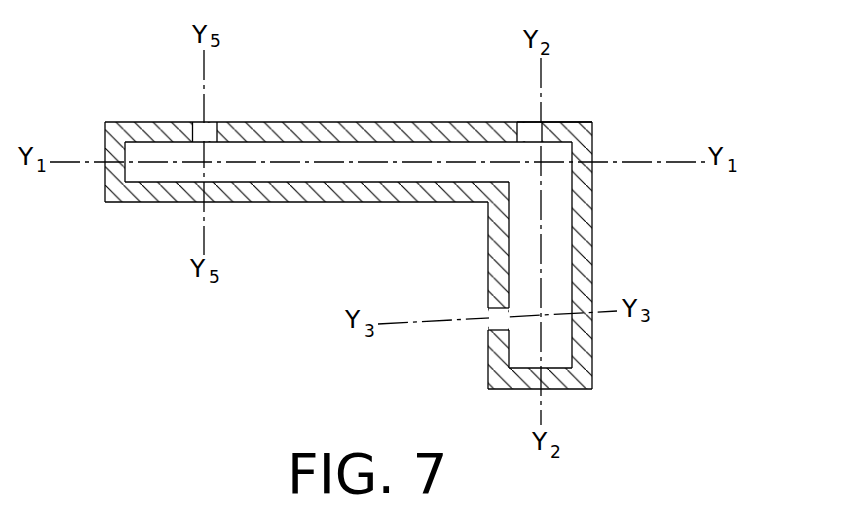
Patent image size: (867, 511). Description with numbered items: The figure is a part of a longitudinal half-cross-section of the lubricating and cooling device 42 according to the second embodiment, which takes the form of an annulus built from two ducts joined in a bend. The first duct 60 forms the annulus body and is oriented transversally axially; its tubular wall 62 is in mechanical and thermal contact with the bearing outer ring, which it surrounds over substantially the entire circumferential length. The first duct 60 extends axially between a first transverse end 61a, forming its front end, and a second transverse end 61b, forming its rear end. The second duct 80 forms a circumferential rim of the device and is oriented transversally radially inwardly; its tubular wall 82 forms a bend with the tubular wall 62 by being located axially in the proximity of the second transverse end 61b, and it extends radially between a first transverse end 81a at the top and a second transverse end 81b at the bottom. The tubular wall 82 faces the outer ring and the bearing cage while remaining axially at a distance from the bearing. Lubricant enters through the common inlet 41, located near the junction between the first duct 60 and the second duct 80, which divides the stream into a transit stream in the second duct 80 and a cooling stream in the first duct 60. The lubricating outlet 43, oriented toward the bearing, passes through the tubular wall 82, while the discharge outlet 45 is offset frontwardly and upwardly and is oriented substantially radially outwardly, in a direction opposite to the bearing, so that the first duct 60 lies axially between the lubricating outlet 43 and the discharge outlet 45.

The lubricating and cooling device 42 is at (686, 122).
The first duct 60 is at (351, 121).
The tubular wall 62 is at (267, 122).
The first transverse end 61a is at (105, 188).
The second transverse end 61b is at (593, 133).
The discharge outlet 45 is at (197, 122).
The lubricant inlet 41 is at (525, 122).
The lubricating outlet 43 is at (489, 313).
The second duct 80 is at (596, 249).
The first transverse end 81a is at (543, 122).
The second transverse end 81b is at (541, 388).
The tubular wall 82 is at (490, 348).